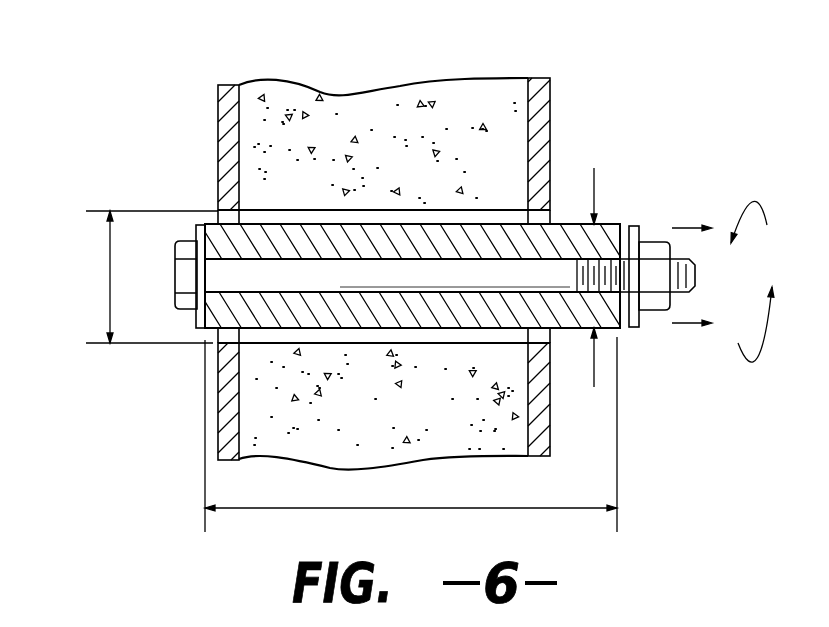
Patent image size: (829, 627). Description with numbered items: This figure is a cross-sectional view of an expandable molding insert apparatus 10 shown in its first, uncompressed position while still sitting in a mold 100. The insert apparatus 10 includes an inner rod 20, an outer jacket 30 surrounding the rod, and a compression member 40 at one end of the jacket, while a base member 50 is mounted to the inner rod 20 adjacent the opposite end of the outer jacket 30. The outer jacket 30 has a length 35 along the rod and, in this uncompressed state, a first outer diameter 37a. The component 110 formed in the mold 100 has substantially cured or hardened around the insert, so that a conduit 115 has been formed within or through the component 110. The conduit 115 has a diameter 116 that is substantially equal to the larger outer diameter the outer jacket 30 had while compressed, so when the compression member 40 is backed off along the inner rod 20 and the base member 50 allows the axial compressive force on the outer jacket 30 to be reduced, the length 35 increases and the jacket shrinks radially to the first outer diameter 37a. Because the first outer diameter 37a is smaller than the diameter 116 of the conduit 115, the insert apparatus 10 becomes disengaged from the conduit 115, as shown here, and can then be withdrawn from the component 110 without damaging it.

The insert apparatus 10 is at (148, 183).
The inner rod 20 is at (463, 267).
The outer jacket 30 is at (266, 312).
The length 35 is at (298, 508).
The first outer diameter 37a is at (596, 181).
The compression member 40 is at (655, 242).
The base member 50 is at (172, 309).
The mold 100 is at (217, 112).
The component 110 is at (357, 102).
The conduit 115 is at (287, 215).
The diameter 116 is at (110, 278).